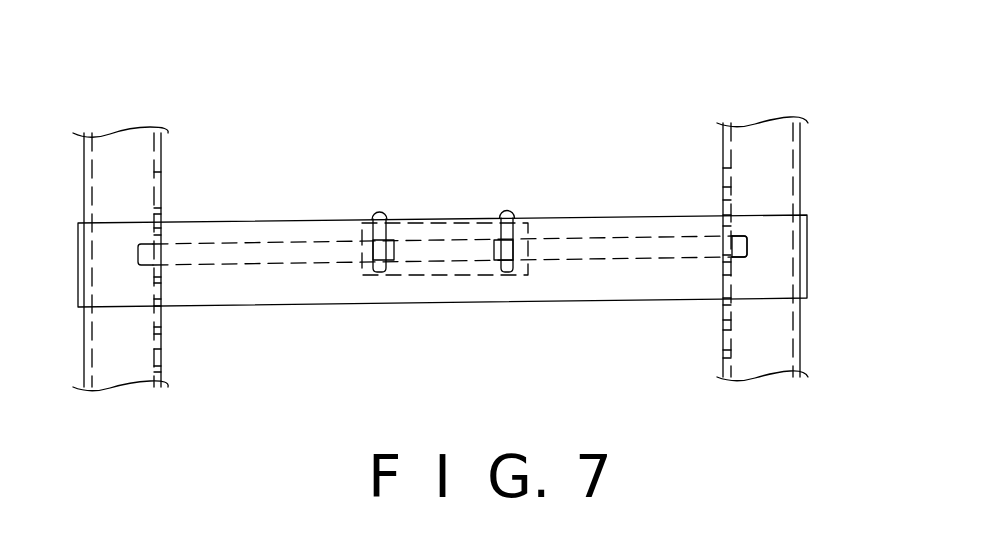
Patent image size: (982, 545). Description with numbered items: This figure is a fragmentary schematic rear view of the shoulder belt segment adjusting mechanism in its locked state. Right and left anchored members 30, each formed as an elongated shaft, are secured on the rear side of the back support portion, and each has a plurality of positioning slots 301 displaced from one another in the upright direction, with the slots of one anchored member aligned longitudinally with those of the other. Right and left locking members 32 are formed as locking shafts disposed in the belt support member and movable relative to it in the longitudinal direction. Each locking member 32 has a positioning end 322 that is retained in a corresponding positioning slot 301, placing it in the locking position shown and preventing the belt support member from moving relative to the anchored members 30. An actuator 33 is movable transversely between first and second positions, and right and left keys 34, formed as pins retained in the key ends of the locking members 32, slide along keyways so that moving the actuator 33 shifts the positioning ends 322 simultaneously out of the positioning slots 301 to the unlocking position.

The anchored member 30 is at (797, 192).
The positioning slot 301 is at (712, 247).
The locking member 32 is at (600, 243).
The positioning end 322 is at (740, 234).
The actuator 33 is at (364, 270).
The key 34 is at (506, 213).